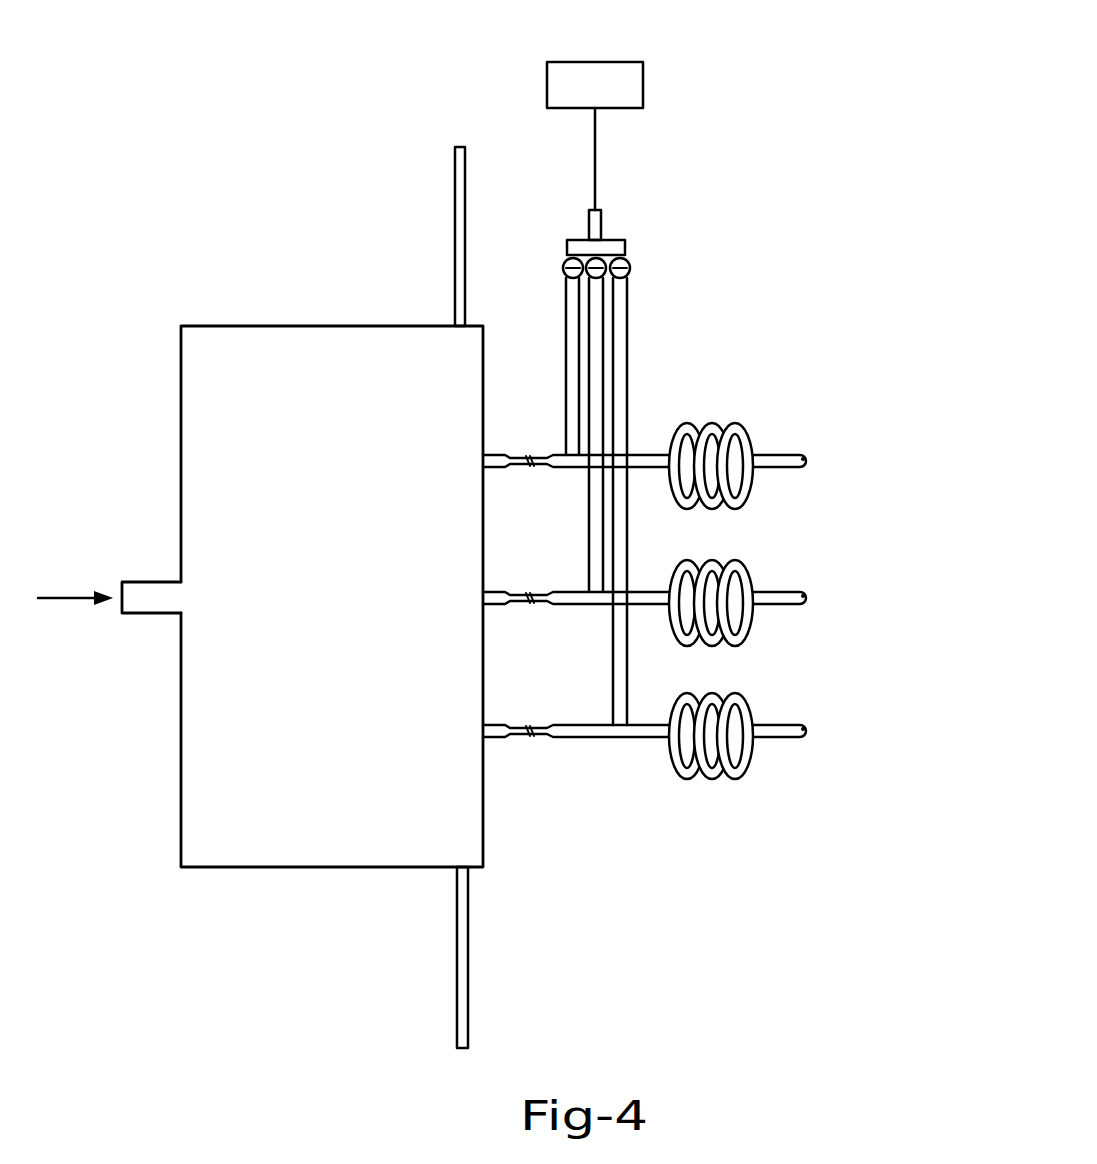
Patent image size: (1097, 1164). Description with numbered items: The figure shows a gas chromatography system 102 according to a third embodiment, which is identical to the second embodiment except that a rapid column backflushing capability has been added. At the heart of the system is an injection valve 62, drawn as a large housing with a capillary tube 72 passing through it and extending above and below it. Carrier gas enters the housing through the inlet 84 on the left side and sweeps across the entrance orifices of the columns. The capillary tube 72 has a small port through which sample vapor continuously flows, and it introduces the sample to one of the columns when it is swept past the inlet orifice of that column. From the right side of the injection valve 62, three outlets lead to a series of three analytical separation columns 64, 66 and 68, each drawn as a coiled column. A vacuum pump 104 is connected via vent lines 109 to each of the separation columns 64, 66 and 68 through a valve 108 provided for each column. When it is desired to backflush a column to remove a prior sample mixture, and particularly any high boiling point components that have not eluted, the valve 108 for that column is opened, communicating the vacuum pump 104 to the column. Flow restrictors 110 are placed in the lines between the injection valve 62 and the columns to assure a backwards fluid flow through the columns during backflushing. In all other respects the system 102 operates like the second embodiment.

The injection valve 62 is at (270, 842).
The separation column 64 is at (746, 425).
The separation column 66 is at (751, 566).
The separation column 68 is at (749, 704).
The capillary tube 72 is at (469, 952).
The inlet 84 is at (142, 582).
The GC system 102 is at (306, 236).
The vacuum pump 104 is at (643, 83).
The valve 108 is at (585, 250).
The vent lines 109 is at (572, 343).
The flow restrictors 110 is at (540, 455).